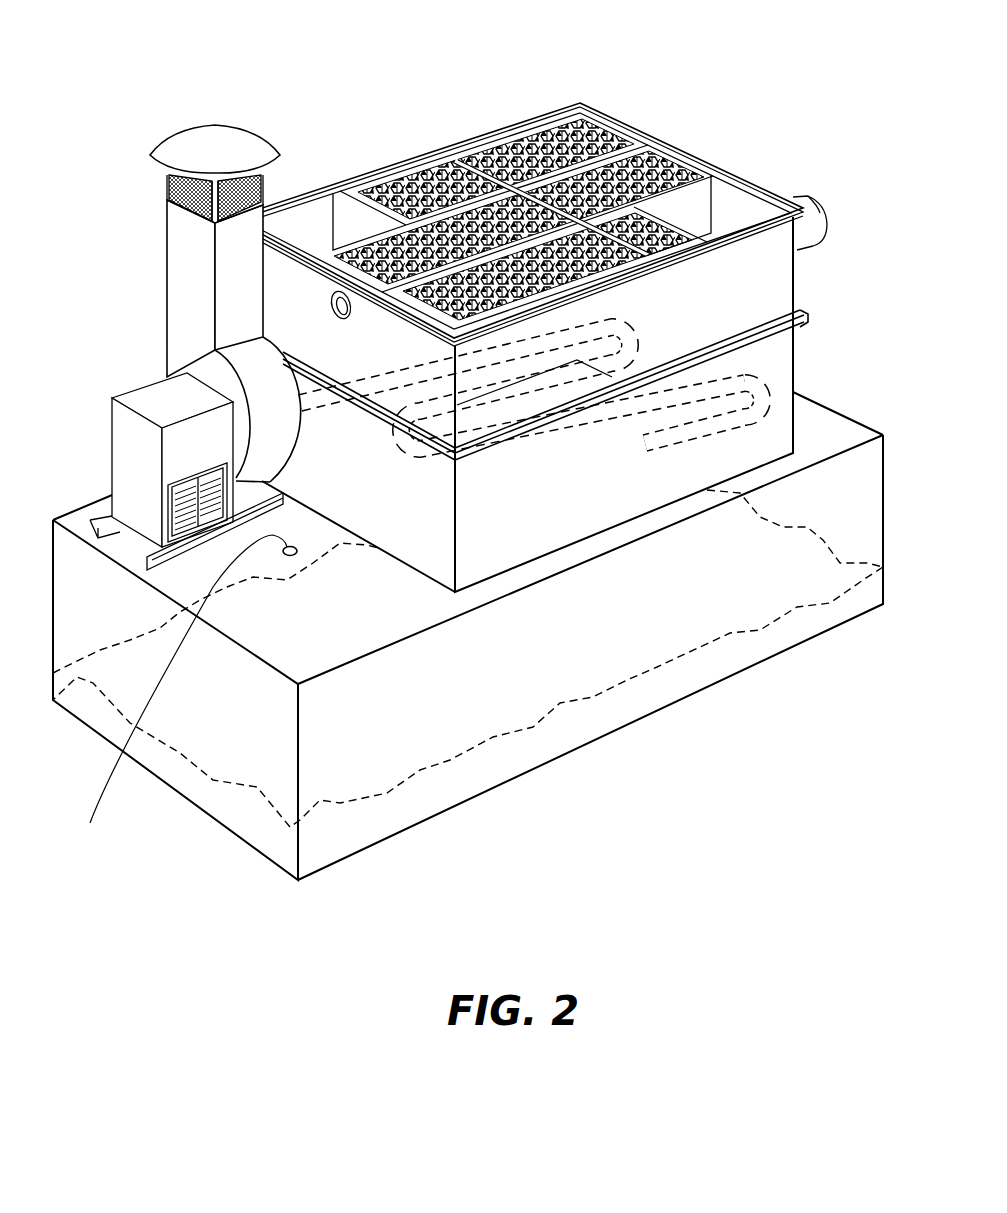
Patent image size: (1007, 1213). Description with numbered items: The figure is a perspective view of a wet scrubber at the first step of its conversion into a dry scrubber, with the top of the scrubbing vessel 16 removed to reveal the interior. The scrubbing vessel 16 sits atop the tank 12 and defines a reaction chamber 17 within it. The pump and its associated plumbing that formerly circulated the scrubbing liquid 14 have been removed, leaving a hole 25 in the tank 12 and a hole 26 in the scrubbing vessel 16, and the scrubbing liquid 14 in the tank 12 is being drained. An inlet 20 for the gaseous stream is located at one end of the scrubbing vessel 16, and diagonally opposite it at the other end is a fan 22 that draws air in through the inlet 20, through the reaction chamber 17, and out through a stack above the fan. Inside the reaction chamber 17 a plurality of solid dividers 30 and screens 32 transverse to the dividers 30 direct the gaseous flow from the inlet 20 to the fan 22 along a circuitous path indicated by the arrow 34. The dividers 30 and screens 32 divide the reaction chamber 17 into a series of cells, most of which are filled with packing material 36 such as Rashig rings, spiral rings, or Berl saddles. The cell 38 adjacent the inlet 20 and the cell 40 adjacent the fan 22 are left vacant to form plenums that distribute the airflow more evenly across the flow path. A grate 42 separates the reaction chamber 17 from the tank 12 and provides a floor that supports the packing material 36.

The tank 12 is at (836, 403).
The scrubbing liquid 14 is at (560, 707).
The scrubbing vessel 16 is at (806, 296).
The reaction chamber 17 is at (545, 88).
The inlet 20 is at (822, 202).
The fan 22 is at (200, 372).
The hole 25 is at (90, 823).
The hole 26 is at (332, 306).
The solid dividers 30 is at (350, 245).
The screens 32 is at (678, 205).
The arrow 34 is at (630, 420).
The packing material 36 is at (482, 155).
The cell 38 is at (728, 198).
The cell 40 is at (319, 212).
The grate 42 is at (743, 430).